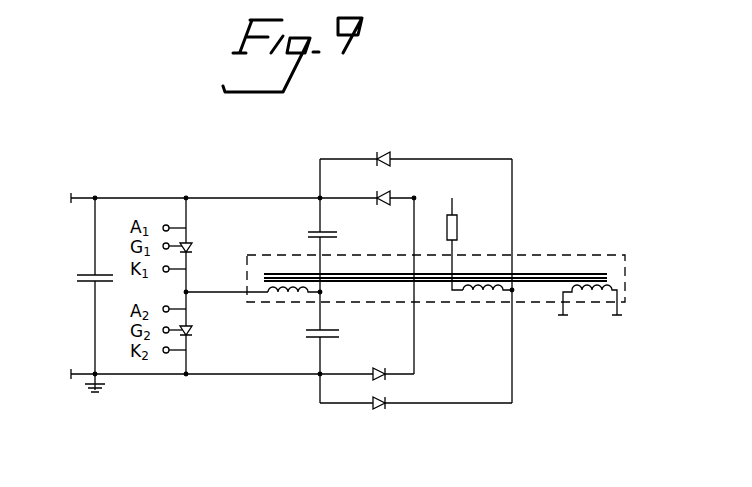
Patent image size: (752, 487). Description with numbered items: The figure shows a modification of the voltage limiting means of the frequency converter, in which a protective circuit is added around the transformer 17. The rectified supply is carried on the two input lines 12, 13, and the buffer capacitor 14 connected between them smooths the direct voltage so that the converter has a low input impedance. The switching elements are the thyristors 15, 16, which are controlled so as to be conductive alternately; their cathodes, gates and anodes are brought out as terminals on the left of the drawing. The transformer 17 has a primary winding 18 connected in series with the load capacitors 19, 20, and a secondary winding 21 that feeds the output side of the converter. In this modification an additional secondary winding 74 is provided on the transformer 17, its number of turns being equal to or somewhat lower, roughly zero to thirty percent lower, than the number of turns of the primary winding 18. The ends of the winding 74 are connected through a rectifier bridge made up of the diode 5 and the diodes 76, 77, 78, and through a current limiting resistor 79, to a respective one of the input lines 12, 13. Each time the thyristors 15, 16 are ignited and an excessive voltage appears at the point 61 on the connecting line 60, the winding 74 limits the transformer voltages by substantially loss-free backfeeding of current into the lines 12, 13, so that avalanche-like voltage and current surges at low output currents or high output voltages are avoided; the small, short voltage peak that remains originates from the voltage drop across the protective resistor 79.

The diode 5 is at (393, 155).
The input line 12 is at (128, 197).
The input line 13 is at (195, 385).
The buffer capacitor 14 is at (77, 280).
The thyristor 15 is at (190, 245).
The thyristor 16 is at (193, 330).
The transformer 17 is at (545, 254).
The primary winding 18 is at (272, 296).
The load capacitor 19 is at (308, 231).
The load capacitor 20 is at (312, 337).
The secondary winding 21 is at (605, 274).
The connection line 60 is at (190, 293).
The point 61 is at (327, 288).
The additional secondary winding 74 is at (481, 293).
The rectifier bridge diode 76 is at (391, 194).
The rectifier bridge diode 77 is at (378, 364).
The rectifier bridge diode 78 is at (395, 403).
The current limiting resistor 79 is at (457, 226).